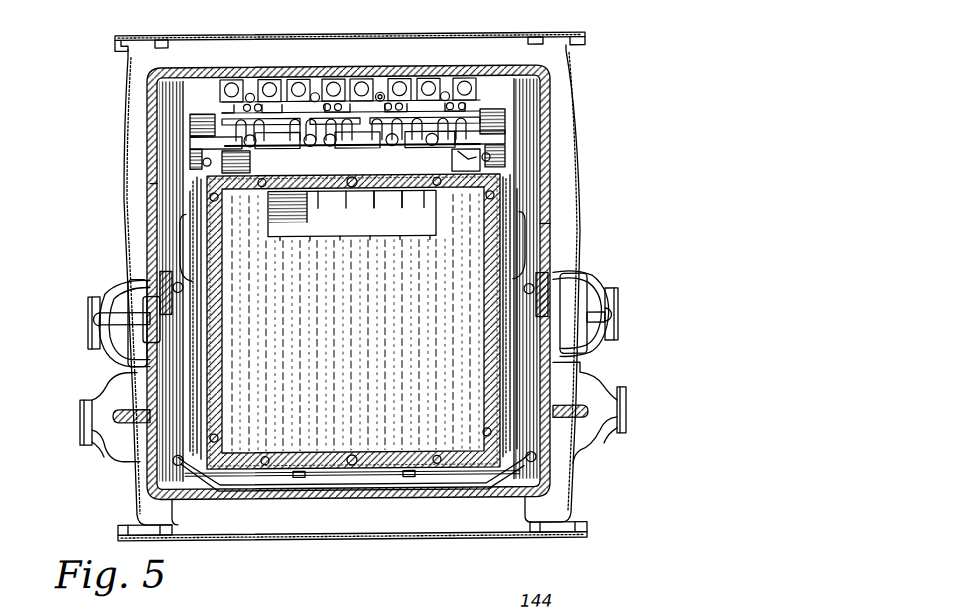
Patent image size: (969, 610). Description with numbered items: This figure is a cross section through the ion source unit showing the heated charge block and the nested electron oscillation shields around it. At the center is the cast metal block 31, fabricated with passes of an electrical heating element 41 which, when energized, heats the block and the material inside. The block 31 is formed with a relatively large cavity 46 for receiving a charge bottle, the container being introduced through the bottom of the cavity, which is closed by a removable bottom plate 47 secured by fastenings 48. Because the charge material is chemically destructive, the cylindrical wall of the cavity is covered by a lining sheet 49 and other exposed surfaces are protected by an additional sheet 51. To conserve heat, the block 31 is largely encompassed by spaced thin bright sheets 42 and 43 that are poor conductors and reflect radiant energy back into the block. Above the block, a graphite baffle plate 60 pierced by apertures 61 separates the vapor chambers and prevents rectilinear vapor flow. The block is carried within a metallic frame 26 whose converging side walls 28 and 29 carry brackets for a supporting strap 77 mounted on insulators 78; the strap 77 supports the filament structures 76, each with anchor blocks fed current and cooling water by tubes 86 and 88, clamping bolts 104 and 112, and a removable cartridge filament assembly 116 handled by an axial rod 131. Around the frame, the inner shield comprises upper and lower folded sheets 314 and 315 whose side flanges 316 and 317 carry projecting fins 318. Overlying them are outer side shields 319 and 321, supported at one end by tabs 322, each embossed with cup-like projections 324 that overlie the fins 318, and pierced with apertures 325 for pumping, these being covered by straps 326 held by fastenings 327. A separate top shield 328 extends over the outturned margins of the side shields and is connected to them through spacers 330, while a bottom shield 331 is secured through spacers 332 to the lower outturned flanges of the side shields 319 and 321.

The metallic frame 26 is at (165, 485).
The converging side wall 28 is at (165, 282).
The converging side wall 29 is at (553, 282).
The block 31 is at (484, 281).
The electrical heating element 41 is at (258, 180).
The sheet 42 is at (505, 308).
The sheet 43 is at (482, 245).
The cavity 46 is at (378, 335).
The removable bottom plate 47 is at (336, 470).
The fastenings 48 is at (300, 478).
The lining sheet 49 is at (480, 350).
The sheet 51 is at (406, 200).
The baffle plate 60 is at (362, 231).
The apertures 61 is at (380, 208).
The filament structure 76 is at (311, 84).
The supporting strap 77 is at (190, 142).
The insulators 78 is at (190, 128).
The cooling water tube 86 is at (243, 127).
The squirt tube 88 is at (265, 85).
The bolt 104 is at (430, 78).
The bolt 112 is at (470, 78).
The filament assembly 116 is at (377, 89).
The axial rod 131 is at (251, 88).
The upper inner shield 314 is at (192, 66).
The lower inner shield 315 is at (558, 478).
The side flanges 316 is at (150, 182).
The side flanges 317 is at (155, 468).
The projecting fins 318 is at (135, 318).
The outer side shield 319 is at (128, 245).
The outer side shield 321 is at (583, 258).
The tabs 322 is at (587, 528).
The cup-like projection 324 is at (110, 297).
The apertures 325 is at (96, 422).
The straps 326 is at (86, 333).
The fastenings 327 is at (100, 322).
The top shield 328 is at (342, 34).
The spacers 330 is at (116, 45).
The bottom shield 331 is at (456, 540).
The spacers 332 is at (174, 532).